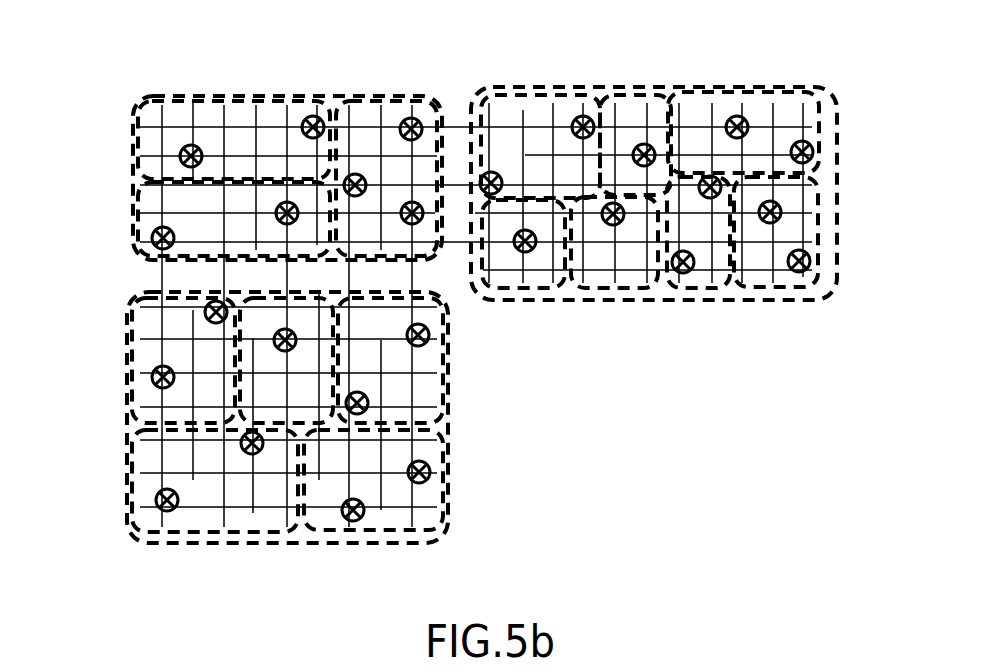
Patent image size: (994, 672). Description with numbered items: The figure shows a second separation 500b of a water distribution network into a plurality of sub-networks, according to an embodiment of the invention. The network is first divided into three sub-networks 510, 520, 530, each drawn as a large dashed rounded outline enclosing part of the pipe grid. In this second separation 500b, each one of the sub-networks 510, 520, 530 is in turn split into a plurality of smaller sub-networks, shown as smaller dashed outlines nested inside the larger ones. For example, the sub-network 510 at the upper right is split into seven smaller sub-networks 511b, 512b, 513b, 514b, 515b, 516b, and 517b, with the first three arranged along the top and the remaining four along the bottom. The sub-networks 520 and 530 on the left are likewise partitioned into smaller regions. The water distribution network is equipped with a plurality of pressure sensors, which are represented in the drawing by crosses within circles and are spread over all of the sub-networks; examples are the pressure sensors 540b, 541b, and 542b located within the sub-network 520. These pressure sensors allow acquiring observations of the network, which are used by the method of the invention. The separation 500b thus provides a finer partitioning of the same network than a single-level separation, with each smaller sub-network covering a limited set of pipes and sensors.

The second separation 500b is at (618, 452).
The sub-network 510 is at (699, 201).
The smaller sub-network 511b is at (502, 94).
The smaller sub-network 512b is at (640, 94).
The smaller sub-network 513b is at (793, 92).
The smaller sub-network 514b is at (520, 292).
The smaller sub-network 515b is at (610, 292).
The smaller sub-network 516b is at (697, 290).
The smaller sub-network 517b is at (833, 227).
The sub-network 520 is at (237, 153).
The sub-network 530 is at (127, 408).
The pressure sensor 540b is at (182, 151).
The pressure sensor 541b is at (310, 120).
The pressure sensor 542b is at (408, 120).